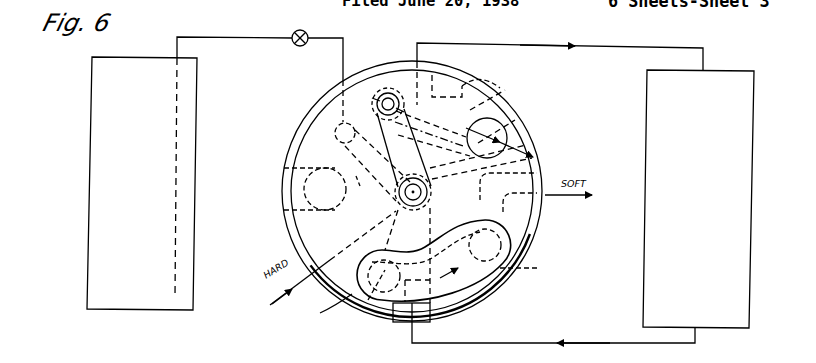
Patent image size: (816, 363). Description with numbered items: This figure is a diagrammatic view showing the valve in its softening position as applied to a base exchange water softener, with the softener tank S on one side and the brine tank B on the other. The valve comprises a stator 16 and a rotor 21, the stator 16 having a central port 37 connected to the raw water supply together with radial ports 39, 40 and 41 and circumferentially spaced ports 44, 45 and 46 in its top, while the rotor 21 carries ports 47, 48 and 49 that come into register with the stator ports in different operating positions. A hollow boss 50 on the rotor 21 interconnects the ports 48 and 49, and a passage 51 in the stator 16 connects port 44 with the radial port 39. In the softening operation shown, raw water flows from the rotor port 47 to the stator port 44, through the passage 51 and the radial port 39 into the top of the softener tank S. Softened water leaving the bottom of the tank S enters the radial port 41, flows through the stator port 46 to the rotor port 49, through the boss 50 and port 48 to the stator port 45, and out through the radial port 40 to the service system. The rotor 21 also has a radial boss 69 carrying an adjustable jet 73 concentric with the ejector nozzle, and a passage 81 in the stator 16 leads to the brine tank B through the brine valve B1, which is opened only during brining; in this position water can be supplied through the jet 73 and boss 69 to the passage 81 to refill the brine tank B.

The stator 16 is at (296, 233).
The rotor 21 is at (325, 311).
The central port 37 is at (418, 208).
The radial port 39 is at (462, 68).
The radial port 40 is at (546, 160).
The radial port 41 is at (440, 320).
The stator port 44 is at (515, 100).
The stator port 45 is at (540, 233).
The stator port 46 is at (368, 300).
The rotor port 47 is at (508, 131).
The rotor port 48 is at (540, 268).
The rotor port 49 is at (336, 258).
The hollow boss 50 is at (496, 300).
The passage 51 is at (495, 88).
The radial boss 69 is at (425, 172).
The jet 73 is at (395, 92).
The passage 81 is at (347, 170).
The brine tank B is at (197, 179).
The brine valve B1 is at (296, 46).
The softener tank S is at (740, 206).